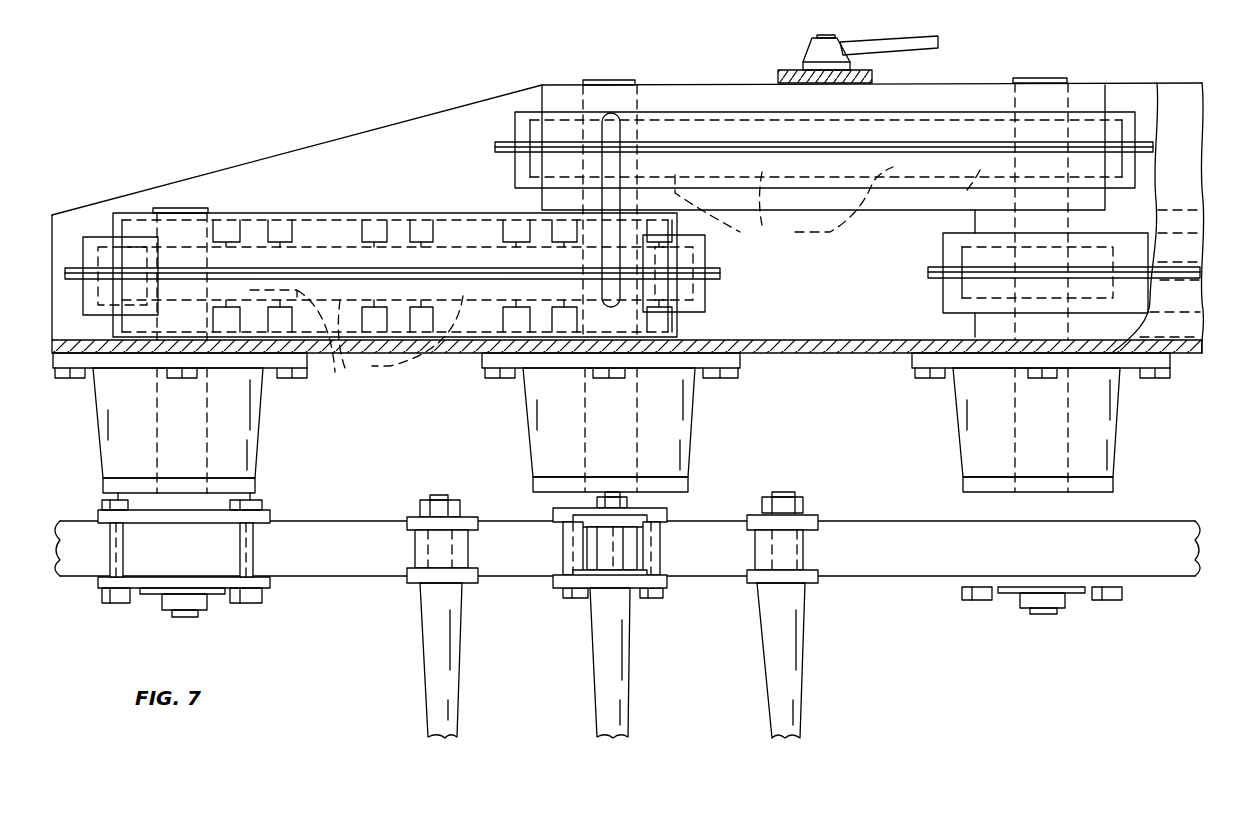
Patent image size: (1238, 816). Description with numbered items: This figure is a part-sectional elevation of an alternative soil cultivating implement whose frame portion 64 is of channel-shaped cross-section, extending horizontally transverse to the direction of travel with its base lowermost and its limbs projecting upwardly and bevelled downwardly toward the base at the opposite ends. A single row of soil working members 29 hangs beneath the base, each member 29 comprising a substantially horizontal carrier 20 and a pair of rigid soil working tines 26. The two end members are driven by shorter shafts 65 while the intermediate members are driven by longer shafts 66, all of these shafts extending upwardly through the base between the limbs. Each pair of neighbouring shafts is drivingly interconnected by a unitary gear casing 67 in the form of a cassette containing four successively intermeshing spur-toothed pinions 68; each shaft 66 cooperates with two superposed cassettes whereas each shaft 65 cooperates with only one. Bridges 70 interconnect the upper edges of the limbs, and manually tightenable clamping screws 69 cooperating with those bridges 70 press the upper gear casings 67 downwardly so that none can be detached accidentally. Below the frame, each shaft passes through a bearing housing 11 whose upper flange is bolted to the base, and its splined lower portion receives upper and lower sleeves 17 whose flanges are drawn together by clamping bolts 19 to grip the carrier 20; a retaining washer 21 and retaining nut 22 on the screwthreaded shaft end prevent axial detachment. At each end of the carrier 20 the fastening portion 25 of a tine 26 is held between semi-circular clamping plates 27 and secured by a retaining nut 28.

The bearing housing 11 is at (258, 445).
The sleeve 17 is at (87, 516).
The clamping bolt 19 is at (104, 602).
The carrier 20 is at (338, 522).
The retaining washer 21 is at (148, 597).
The retaining nut 22 is at (196, 612).
The tine fastening portion 25 is at (440, 495).
The soil working tine 26 is at (430, 668).
The clamping plate 27 is at (478, 528).
The retaining nut 28 is at (462, 512).
The soil working member 29 is at (315, 644).
The frame portion 64 is at (352, 146).
The shaft 65 is at (200, 211).
The shaft 66 is at (598, 82).
The gear casing 67 is at (346, 224).
The pinion 68 is at (718, 297).
The clamping screw 69 is at (930, 48).
The bridge 70 is at (780, 76).